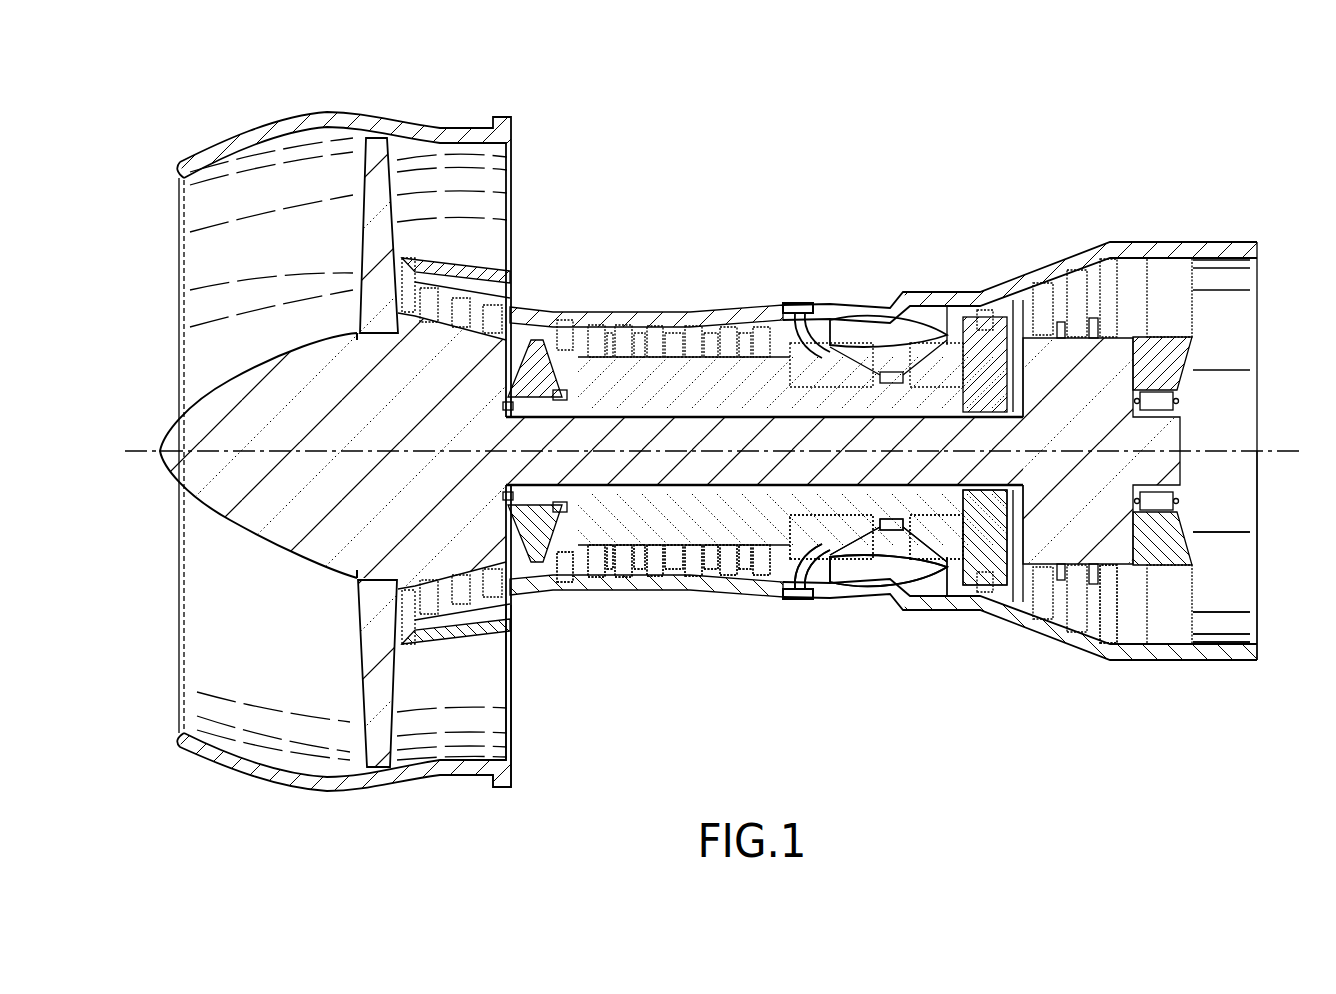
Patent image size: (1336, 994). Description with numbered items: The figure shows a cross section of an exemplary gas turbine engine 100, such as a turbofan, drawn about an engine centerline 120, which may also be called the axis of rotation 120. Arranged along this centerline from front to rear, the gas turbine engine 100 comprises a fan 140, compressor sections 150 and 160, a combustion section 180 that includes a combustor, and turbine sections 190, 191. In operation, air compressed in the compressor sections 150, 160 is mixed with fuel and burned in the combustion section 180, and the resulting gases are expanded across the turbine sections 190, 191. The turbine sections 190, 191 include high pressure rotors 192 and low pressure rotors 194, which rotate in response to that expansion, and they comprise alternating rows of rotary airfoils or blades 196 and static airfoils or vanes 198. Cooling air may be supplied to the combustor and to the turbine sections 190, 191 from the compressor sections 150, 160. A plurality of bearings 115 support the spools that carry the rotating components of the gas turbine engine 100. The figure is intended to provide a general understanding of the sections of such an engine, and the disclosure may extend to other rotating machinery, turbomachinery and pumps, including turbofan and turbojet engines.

The gas turbine engine 100 is at (971, 171).
The bearings 115 is at (1180, 394).
The engine centerline 120 is at (134, 450).
The fan 140 is at (400, 192).
The compressor section 150 is at (400, 795).
The compressor section 160 is at (578, 607).
The combustion section 180 is at (815, 627).
The turbine section 190 is at (980, 677).
The turbine section 191 is at (1035, 677).
The high pressure rotors 192 is at (990, 312).
The low pressure rotors 194 is at (1120, 357).
The blades 196 is at (1060, 294).
The vanes 198 is at (1077, 278).